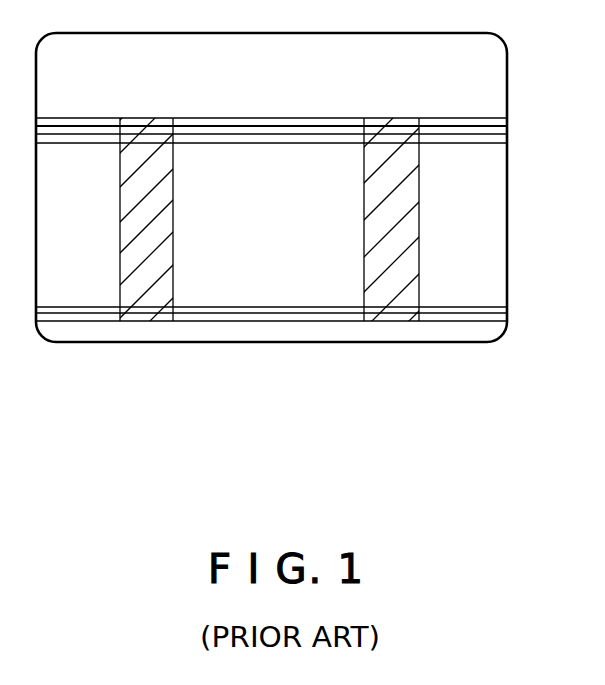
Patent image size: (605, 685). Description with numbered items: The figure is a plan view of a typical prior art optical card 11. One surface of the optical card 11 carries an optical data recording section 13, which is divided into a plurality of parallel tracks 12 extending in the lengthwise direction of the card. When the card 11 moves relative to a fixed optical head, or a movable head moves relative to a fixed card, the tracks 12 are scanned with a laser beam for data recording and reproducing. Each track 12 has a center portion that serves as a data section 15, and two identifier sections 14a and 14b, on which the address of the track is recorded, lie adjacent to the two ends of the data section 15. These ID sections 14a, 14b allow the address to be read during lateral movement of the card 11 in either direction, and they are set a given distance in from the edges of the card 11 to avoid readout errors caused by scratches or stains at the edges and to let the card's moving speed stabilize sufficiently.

The optical card 11 is at (221, 343).
The tracks 12 is at (478, 117).
The optical data recording section 13 is at (513, 115).
The identifier (ID) section 14a is at (142, 298).
The identifier (ID) section 14b is at (410, 287).
The data section 15 is at (307, 297).